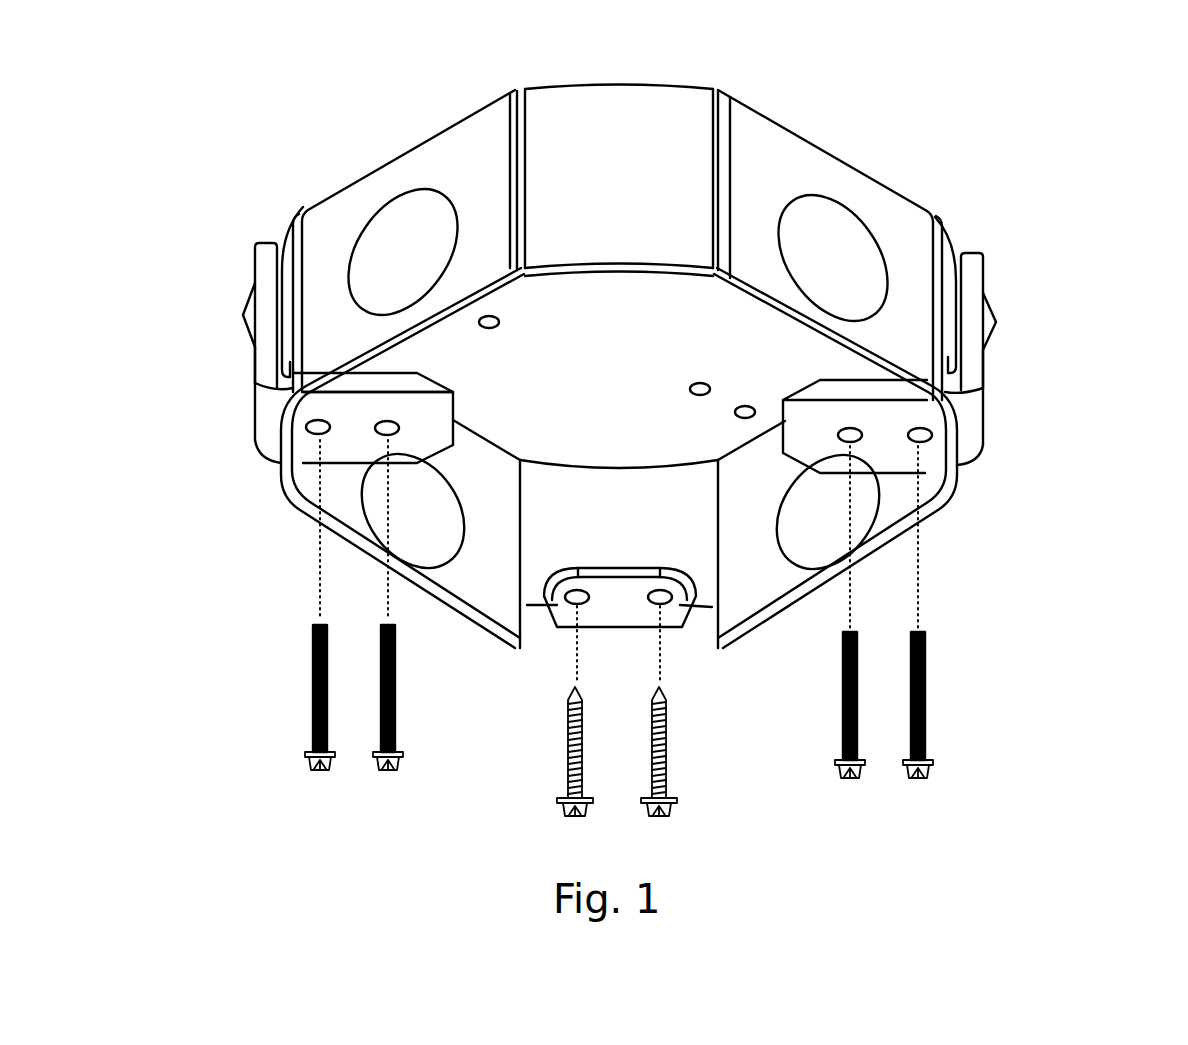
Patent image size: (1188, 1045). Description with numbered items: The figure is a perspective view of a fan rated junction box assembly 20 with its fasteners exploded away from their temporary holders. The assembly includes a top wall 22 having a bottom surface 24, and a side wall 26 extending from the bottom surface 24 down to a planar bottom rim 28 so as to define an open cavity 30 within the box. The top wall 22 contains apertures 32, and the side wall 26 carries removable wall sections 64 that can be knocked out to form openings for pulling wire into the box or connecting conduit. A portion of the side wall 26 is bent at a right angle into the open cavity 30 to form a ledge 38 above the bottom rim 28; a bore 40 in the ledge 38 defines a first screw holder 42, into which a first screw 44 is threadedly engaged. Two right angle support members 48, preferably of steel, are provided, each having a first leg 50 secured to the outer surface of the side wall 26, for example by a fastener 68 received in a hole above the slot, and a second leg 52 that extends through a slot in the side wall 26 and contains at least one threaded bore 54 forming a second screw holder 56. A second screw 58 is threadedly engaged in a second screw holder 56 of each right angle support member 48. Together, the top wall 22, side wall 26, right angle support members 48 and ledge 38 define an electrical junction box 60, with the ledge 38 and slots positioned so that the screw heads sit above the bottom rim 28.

The fan rated junction box assembly 20 is at (731, 365).
The top wall 22 is at (687, 310).
The bottom surface 24 is at (594, 315).
The side wall 26 is at (594, 191).
The planar bottom rim 28 is at (475, 625).
The open cavity 30 is at (688, 520).
The apertures 32 is at (495, 320).
The ledge 38 is at (684, 618).
The bore 40 is at (660, 596).
The first screw holder 42 is at (660, 604).
The first screw 44 is at (592, 812).
The right angle support member 48 is at (255, 400).
The first leg 50 is at (255, 275).
The second leg 52 is at (388, 380).
The threaded bore 54 is at (330, 424).
The second screw holder 56 is at (379, 437).
The second screw 58 is at (330, 770).
The electrical junction box 60 is at (930, 217).
The removable wall sections 64 is at (382, 271).
The fastener 68 is at (243, 315).